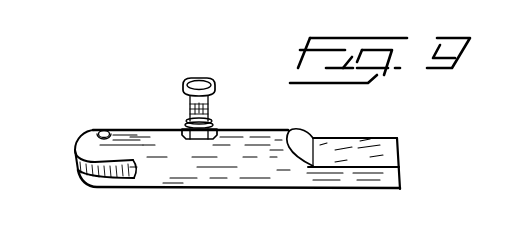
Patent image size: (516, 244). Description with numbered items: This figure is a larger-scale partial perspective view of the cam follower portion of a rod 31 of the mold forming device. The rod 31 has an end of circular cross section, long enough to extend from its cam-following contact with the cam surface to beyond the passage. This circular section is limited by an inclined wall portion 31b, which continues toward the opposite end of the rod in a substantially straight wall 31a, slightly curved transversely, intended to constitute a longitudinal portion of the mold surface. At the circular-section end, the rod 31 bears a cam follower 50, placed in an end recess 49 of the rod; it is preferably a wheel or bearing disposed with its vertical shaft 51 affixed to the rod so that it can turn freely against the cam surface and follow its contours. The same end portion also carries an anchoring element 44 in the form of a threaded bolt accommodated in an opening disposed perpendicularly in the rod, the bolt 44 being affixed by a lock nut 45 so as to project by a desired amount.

The rod 31 is at (245, 177).
The substantially straight wall 31a is at (399, 145).
The inclined wall portion 31b is at (303, 130).
The anchoring element 44 is at (214, 108).
The lock nut 45 is at (185, 124).
The end recess 49 is at (137, 178).
The cam follower 50 is at (75, 162).
The vertical shaft 51 is at (104, 130).